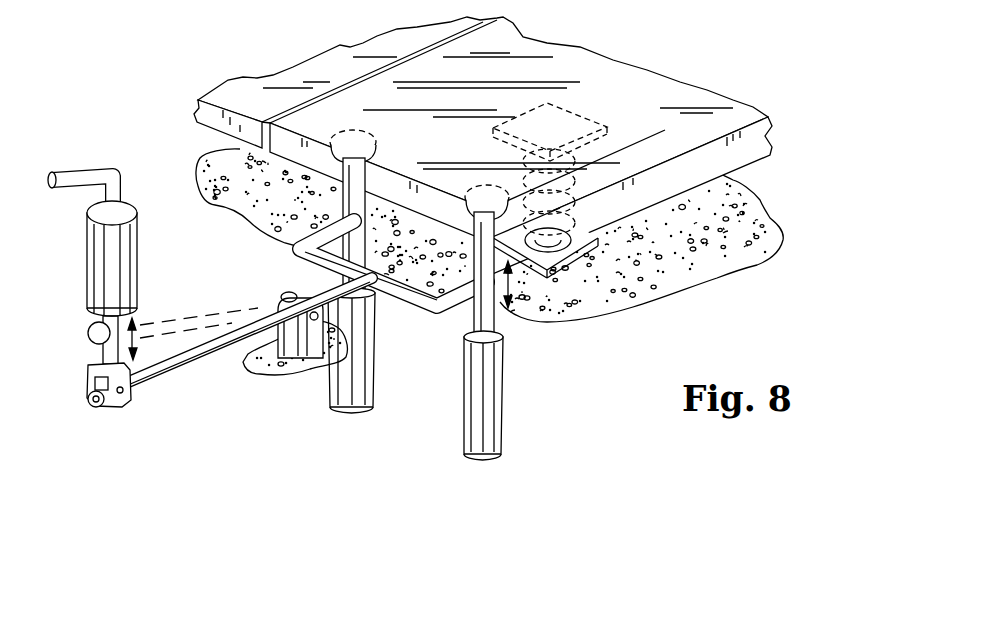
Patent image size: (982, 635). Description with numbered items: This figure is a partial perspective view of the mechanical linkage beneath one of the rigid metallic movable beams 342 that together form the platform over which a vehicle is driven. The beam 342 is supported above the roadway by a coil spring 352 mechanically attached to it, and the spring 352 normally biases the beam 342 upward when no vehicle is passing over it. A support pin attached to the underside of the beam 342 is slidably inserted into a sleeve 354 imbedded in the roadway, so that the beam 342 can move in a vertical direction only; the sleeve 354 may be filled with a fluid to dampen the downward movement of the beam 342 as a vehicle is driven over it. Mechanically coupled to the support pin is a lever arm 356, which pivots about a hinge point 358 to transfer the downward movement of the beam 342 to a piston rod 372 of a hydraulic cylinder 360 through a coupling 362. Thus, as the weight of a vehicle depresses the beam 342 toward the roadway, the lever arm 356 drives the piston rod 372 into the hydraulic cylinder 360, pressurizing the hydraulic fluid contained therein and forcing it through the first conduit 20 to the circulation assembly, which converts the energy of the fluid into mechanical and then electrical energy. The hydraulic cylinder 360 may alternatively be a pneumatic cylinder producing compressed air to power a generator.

The first conduit 20 is at (80, 170).
The beam 342 is at (728, 106).
The coil spring 352 is at (570, 197).
The sleeve 354 is at (505, 361).
The lever arm 356 is at (252, 326).
The hinge point 358 is at (323, 362).
The hydraulic cylinder 360 is at (137, 232).
The coupling 362 is at (130, 406).
The piston rod 372 is at (112, 320).